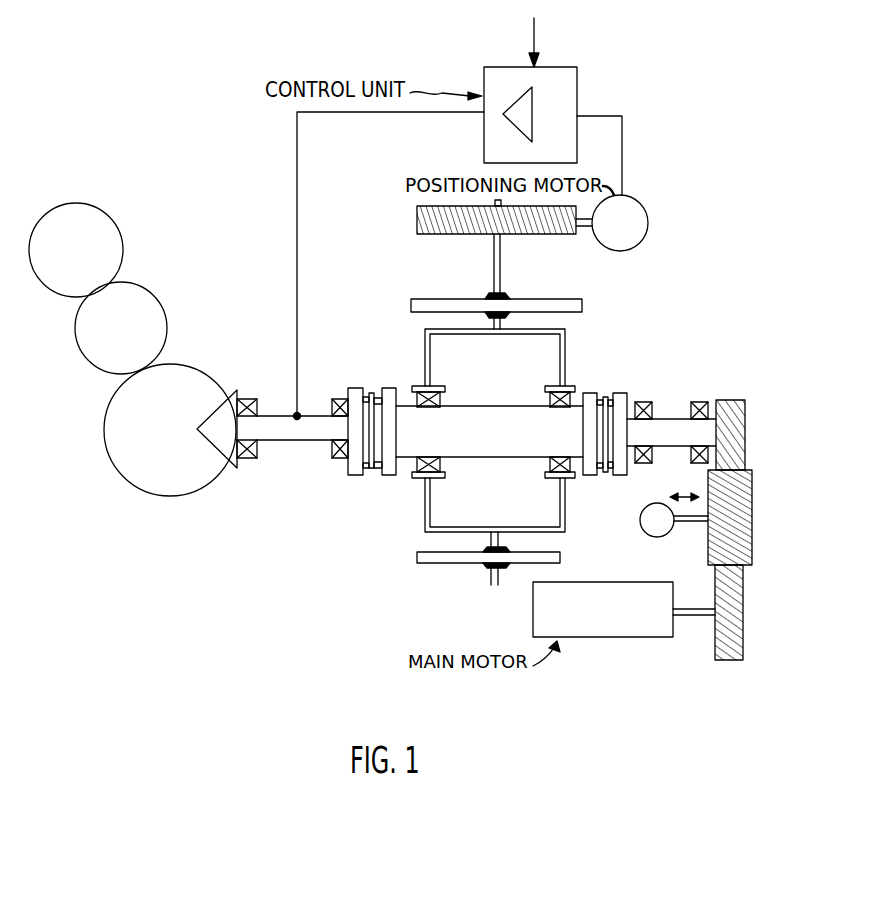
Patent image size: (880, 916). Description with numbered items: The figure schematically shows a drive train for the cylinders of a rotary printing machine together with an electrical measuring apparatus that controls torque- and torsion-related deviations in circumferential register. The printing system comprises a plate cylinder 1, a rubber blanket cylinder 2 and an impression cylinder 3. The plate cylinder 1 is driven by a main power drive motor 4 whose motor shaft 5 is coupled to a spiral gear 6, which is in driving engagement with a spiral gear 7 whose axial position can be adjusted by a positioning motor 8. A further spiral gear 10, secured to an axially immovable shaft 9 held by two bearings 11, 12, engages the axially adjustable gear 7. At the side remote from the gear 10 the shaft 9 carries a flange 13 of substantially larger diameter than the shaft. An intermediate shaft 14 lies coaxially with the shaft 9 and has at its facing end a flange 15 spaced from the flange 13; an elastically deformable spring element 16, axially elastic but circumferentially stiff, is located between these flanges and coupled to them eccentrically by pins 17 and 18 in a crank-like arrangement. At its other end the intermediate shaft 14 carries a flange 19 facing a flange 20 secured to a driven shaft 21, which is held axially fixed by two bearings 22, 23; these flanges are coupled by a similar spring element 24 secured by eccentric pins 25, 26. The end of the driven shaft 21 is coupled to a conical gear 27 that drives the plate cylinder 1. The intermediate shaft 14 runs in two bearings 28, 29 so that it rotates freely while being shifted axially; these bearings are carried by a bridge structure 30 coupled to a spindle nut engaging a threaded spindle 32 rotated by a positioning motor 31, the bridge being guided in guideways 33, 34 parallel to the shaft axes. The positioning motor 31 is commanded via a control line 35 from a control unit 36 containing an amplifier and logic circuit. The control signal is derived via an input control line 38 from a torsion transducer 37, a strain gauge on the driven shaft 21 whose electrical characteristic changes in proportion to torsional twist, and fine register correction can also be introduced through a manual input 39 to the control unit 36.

The plate cylinder 1 is at (190, 378).
The rubber blanket cylinder 2 is at (150, 310).
The impression cylinder 3 is at (107, 238).
The main power drive motor 4 is at (612, 637).
The motor shaft 5 is at (692, 616).
The spiral gear 6 is at (721, 660).
The spiral gear 7 is at (708, 540).
The positioning motor 8 is at (647, 532).
The shaft 9 is at (673, 426).
The spiral gear 10 is at (730, 405).
The bearing 11 is at (645, 402).
The bearing 12 is at (700, 402).
The flange 13 is at (621, 393).
The intermediate shaft 14 is at (497, 450).
The flange 15 is at (590, 393).
The spring element 16 is at (608, 470).
The pin 17 is at (606, 397).
The pin 18 is at (600, 470).
The flange 19 is at (390, 388).
The flange 20 is at (352, 388).
The driven shaft 21 is at (293, 440).
The bearing 22 is at (338, 458).
The bearing 23 is at (240, 460).
The spring element 24 is at (371, 468).
The pin 25 is at (378, 470).
The pin 26 is at (371, 393).
The conical gear 27 is at (212, 454).
The bearing 28 is at (441, 392).
The bearing 29 is at (550, 400).
The bridge structure 30 is at (537, 337).
The positioning motor 31 is at (641, 226).
The threaded spindle 32 is at (430, 236).
The guideway 33 is at (456, 563).
The guideway 34 is at (546, 298).
The control line 35 is at (623, 148).
The control unit 36 is at (566, 92).
The torsion transducer 37 is at (297, 412).
The input control line 38 is at (297, 182).
The manual input 39 is at (536, 58).